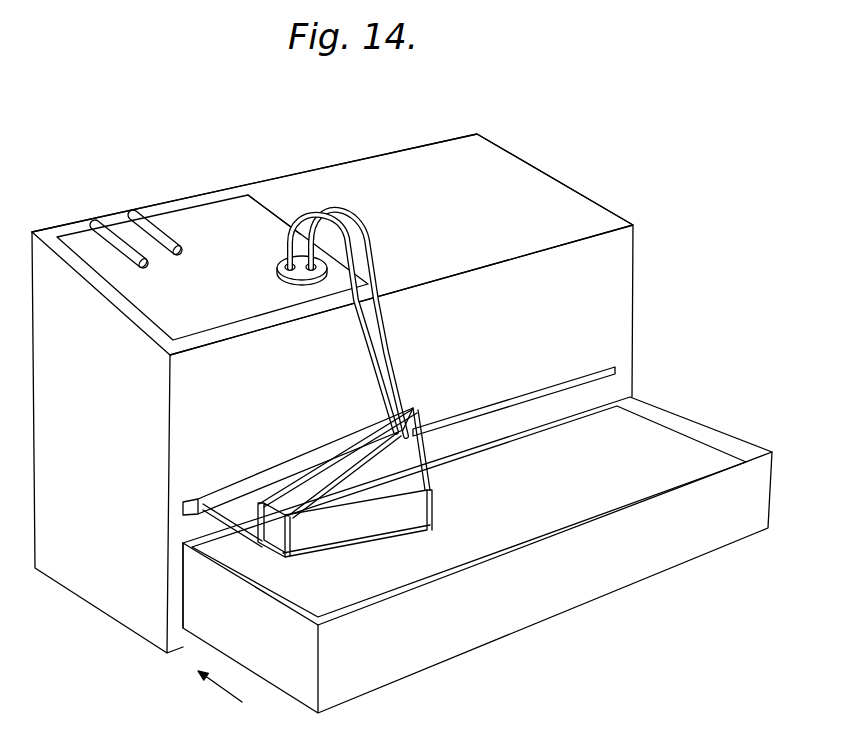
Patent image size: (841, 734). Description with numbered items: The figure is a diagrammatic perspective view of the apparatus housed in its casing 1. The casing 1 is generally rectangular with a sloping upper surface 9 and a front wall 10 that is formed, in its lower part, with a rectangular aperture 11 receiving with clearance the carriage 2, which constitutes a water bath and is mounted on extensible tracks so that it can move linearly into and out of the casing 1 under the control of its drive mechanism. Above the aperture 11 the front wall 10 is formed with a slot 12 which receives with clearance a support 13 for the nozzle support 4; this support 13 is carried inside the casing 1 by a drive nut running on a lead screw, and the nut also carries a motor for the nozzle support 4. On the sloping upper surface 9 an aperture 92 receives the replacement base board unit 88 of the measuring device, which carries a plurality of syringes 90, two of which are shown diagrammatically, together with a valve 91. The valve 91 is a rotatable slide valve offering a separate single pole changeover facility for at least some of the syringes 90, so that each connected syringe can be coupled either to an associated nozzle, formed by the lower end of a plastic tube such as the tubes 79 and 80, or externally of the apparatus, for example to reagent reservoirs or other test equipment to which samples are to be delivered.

The casing 1 is at (560, 183).
The carriage 2 is at (424, 670).
The nozzle support 4 is at (360, 544).
The sloping upper surface 9 is at (377, 172).
The front wall 10 is at (185, 429).
The rectangular aperture 11 is at (182, 572).
The slot 12 is at (198, 497).
The support 13 is at (232, 515).
The plastic tube 79 is at (403, 383).
The plastic tube 80 is at (373, 356).
The base board unit 88 is at (210, 217).
The syringes 90 is at (177, 254).
The valve 91 is at (281, 270).
The aperture 92 is at (269, 218).